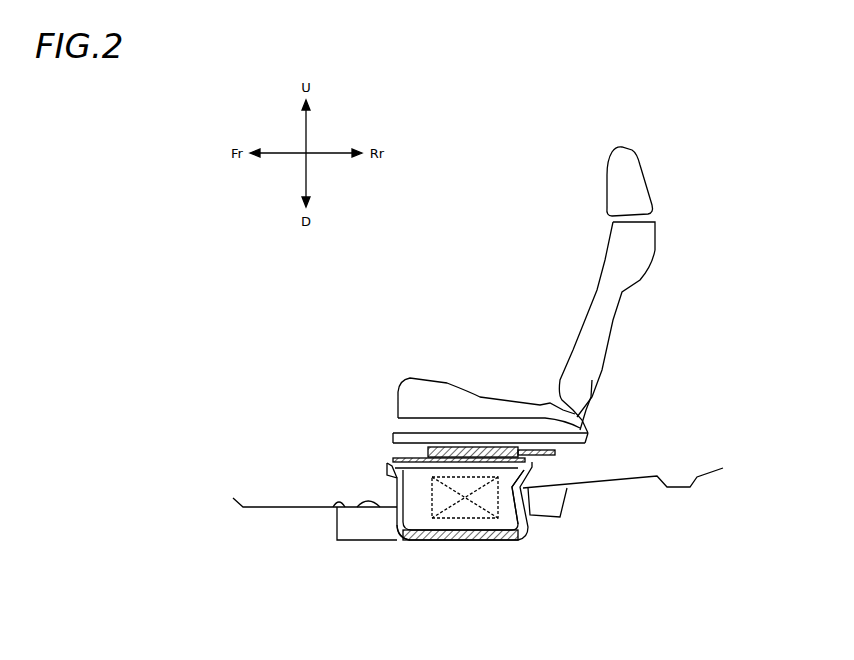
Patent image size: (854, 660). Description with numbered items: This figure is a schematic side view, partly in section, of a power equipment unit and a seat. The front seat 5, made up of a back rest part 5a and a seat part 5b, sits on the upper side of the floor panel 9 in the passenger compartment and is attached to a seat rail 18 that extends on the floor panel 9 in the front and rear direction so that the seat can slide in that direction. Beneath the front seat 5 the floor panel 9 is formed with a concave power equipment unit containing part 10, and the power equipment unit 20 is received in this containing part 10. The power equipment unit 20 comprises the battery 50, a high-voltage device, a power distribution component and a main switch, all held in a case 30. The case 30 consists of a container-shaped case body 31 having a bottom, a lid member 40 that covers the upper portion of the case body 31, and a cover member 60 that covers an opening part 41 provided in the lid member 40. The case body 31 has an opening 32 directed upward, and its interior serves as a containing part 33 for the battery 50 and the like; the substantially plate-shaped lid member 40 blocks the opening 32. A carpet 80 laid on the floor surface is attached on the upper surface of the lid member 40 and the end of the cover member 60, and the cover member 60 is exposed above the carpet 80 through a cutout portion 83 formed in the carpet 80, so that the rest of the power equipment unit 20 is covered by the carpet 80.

The front seat 5 is at (682, 257).
The back rest part 5a is at (603, 316).
The seat part 5b is at (422, 383).
The floor panel 9 is at (705, 468).
The power equipment unit containing part 10 is at (425, 518).
The seat rail 18 is at (590, 415).
The power equipment unit 20 is at (382, 486).
The case 30 is at (520, 520).
The case body 31 is at (472, 543).
The opening 32 is at (377, 473).
The containing part 33 is at (410, 550).
The lid member 40 is at (383, 457).
The opening part 41 is at (500, 540).
The battery 50 is at (430, 543).
The cover member 60 is at (460, 450).
The carpet 80 is at (555, 452).
The cutout portion 83 is at (480, 463).